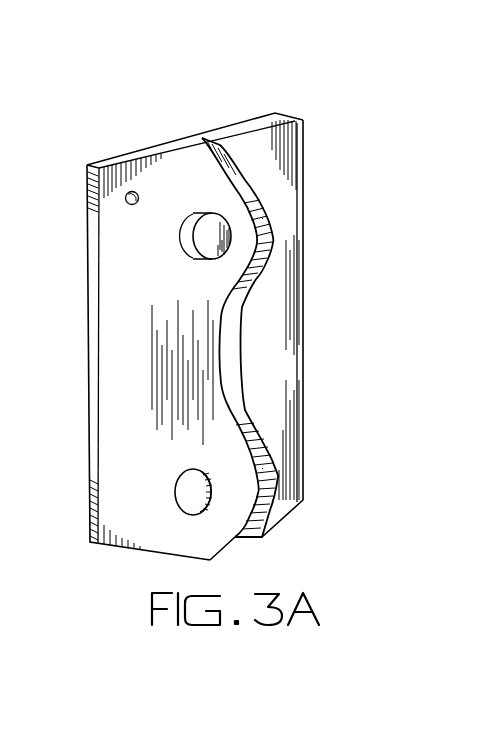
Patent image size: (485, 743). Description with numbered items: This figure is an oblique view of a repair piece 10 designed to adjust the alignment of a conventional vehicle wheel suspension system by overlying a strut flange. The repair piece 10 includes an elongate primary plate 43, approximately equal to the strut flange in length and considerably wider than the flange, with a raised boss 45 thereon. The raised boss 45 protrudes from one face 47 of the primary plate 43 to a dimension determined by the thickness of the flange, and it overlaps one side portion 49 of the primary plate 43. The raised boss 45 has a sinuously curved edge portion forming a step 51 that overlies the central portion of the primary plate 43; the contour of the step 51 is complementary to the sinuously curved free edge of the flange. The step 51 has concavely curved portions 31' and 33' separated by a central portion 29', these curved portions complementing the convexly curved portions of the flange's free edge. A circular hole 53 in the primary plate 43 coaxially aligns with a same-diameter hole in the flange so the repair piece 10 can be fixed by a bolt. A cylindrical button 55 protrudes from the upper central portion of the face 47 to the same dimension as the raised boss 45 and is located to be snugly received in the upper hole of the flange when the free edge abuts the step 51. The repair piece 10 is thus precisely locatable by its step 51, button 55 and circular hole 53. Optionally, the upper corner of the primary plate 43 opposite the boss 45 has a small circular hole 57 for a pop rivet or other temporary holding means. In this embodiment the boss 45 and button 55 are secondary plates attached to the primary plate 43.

The repair piece 10 is at (318, 258).
The central portion 29' is at (287, 349).
The curved portion 31' is at (313, 201).
The curved portion 33' is at (321, 467).
The primary plate 43 is at (146, 146).
The raised boss 45 is at (293, 150).
The face 47 is at (137, 525).
The side portion 49 is at (236, 128).
The step 51 is at (250, 273).
The circular hole 53 is at (207, 513).
The cylindrical button 55 is at (198, 236).
The small circular hole 57 is at (126, 198).